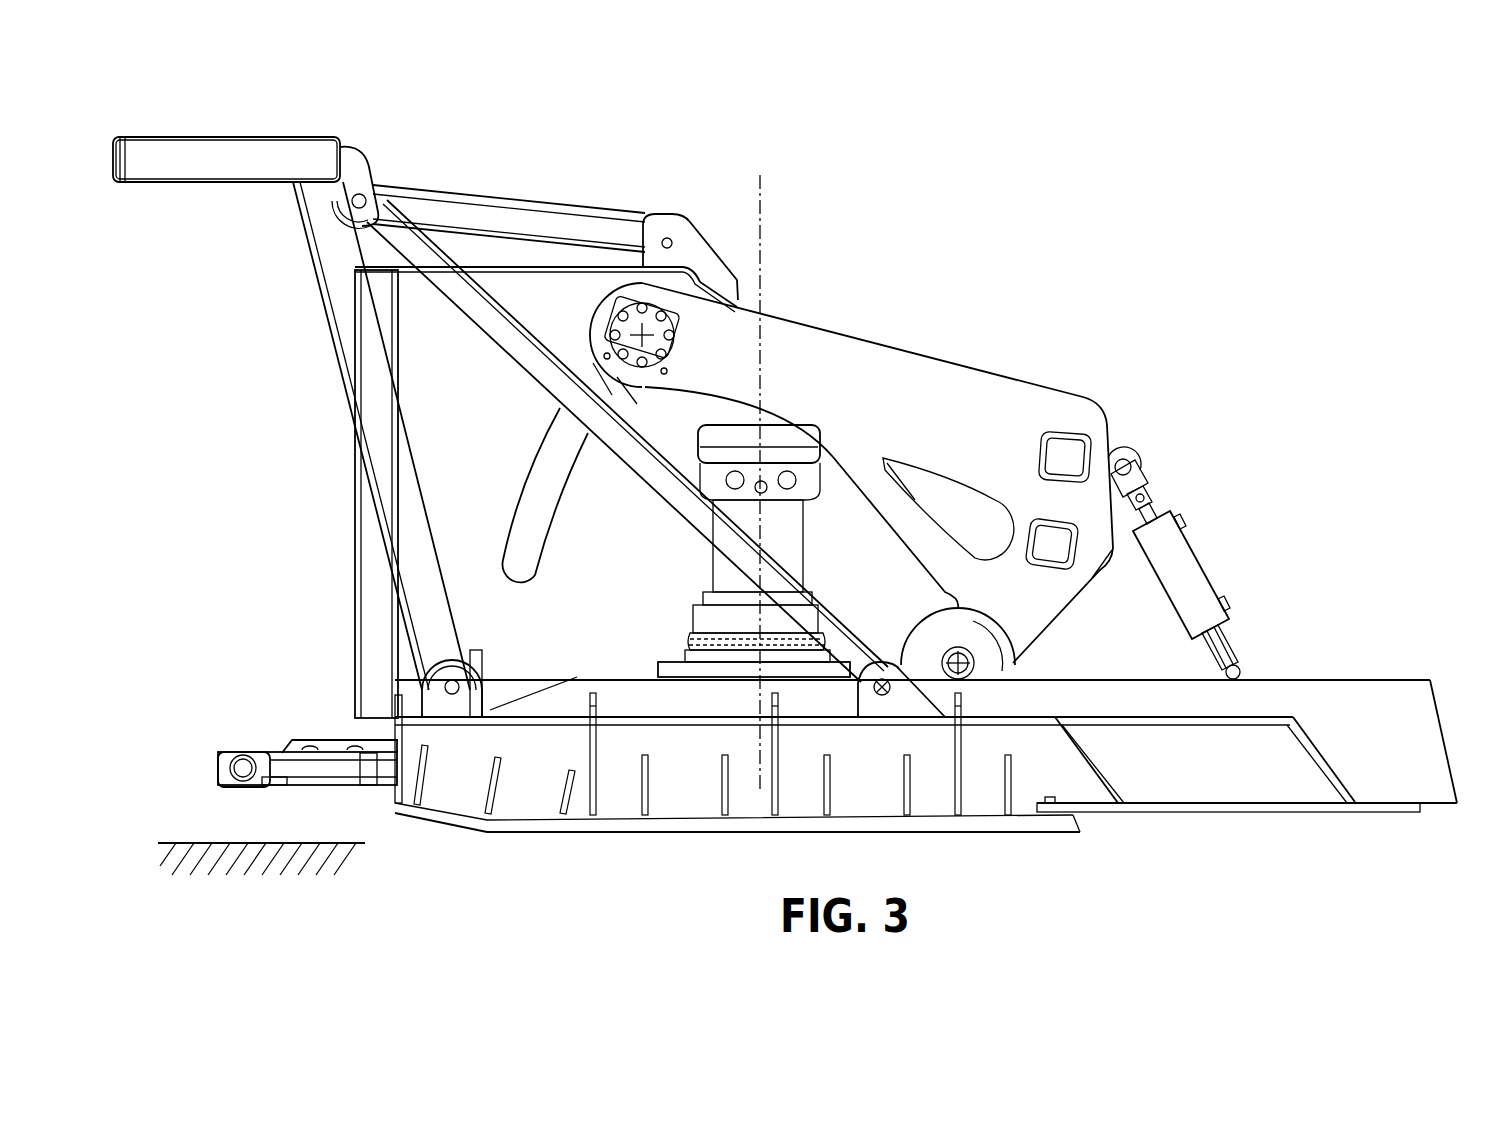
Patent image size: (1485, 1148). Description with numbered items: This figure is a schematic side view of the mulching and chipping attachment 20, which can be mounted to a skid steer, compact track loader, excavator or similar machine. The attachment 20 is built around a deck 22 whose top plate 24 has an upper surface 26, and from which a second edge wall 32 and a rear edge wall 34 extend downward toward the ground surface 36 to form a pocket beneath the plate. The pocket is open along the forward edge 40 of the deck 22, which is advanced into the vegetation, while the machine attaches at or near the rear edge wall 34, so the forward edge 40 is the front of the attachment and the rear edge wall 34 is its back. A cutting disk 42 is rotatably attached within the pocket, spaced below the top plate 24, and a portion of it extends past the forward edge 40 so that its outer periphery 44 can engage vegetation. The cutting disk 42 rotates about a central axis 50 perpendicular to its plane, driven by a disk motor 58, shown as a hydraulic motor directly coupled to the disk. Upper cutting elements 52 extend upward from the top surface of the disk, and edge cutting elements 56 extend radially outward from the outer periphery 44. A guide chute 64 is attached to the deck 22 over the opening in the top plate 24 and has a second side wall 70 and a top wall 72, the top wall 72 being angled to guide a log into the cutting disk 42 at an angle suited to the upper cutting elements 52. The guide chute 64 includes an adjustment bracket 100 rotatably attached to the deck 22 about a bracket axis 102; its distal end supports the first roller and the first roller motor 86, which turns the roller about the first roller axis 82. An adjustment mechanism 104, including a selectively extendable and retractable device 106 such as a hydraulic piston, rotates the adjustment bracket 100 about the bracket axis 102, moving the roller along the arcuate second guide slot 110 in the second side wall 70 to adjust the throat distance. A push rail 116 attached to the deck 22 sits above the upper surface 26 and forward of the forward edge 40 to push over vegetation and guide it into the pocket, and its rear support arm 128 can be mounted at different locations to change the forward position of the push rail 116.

The mulching and chipping attachment 20 is at (950, 200).
The deck 22 is at (1282, 676).
The top plate 24 is at (1380, 676).
The upper surface 26 is at (1325, 676).
The second edge wall 32 is at (1157, 765).
The rear edge wall 34 is at (1330, 765).
The ground surface 36 is at (200, 843).
The forward edge 40 is at (393, 728).
The cutting disk 42 is at (325, 757).
The outer periphery 44 is at (300, 770).
The central axis 50 is at (760, 217).
The upper cutting elements 52 is at (330, 743).
The edge cutting elements 56 is at (215, 770).
The disk motor 58 is at (790, 490).
The guide chute 64 is at (555, 262).
The second side wall 70 is at (425, 367).
The top wall 72 is at (498, 265).
The first roller axis 82 is at (655, 325).
The first roller motor 86 is at (632, 302).
The adjustment bracket 100 is at (895, 340).
The bracket axis 102 is at (1000, 640).
The adjustment mechanism 104 is at (1180, 535).
The selectively extendable and retractable device 106 is at (1187, 585).
The second guide slot 110 is at (520, 487).
The push rail 116 is at (250, 155).
The rear support arm 128 is at (807, 600).